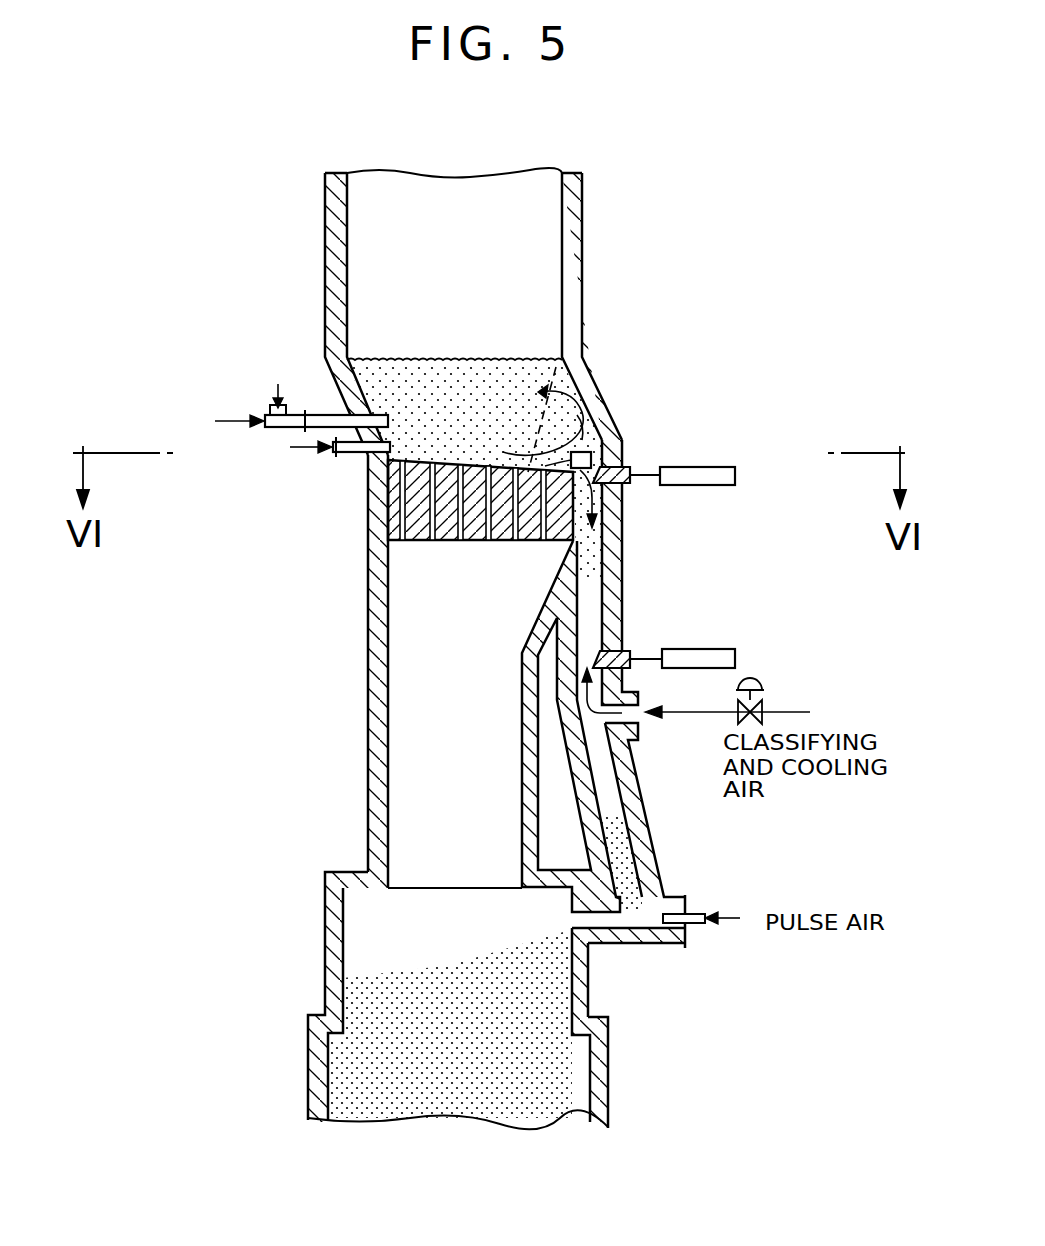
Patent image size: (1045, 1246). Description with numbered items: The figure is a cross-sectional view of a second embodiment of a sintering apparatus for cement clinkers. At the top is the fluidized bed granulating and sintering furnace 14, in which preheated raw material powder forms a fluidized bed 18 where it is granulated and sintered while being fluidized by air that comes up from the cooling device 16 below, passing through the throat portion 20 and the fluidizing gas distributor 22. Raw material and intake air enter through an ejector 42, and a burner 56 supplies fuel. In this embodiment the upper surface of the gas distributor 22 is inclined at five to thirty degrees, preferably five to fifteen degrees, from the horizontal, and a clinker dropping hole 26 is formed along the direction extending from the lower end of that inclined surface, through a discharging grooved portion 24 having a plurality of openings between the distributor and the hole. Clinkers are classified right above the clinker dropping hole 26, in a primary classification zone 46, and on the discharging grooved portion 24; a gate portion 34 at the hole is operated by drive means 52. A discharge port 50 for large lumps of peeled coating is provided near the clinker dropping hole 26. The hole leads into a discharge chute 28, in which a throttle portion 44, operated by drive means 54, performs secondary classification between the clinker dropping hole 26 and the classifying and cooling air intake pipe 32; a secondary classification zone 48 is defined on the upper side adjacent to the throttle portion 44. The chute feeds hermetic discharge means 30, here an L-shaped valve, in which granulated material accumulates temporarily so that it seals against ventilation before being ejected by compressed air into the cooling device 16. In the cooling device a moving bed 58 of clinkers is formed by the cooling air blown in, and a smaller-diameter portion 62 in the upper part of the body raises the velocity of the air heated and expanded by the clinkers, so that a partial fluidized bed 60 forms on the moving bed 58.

The fluidized bed granulating and sintering furnace 14 is at (583, 248).
The cooling device 16 is at (610, 1088).
The fluidized bed 18 is at (486, 372).
The throat portion 20 is at (398, 726).
The fluidizing gas distributor 22 is at (367, 538).
The discharging grooved portion 24 is at (605, 553).
The clinker dropping hole 26 is at (622, 512).
The discharge chute 28 is at (624, 599).
The hermetic discharge means 30 is at (661, 946).
The classifying and cooling air intake pipe 32 is at (673, 717).
The gate portion 34 is at (630, 486).
The ejector 42 is at (278, 429).
The throttle portion 44 is at (625, 650).
The primary classification zone 46 is at (598, 442).
The secondary classification zone 48 is at (598, 590).
The discharge port 50 is at (600, 426).
The drive means of the gate portion 52 is at (737, 473).
The drive means of the throttle portion 54 is at (737, 659).
The burner 56 is at (351, 455).
The moving bed 58 is at (360, 1062).
The partial fluidized bed 60 is at (362, 994).
The smaller-diameter portion 62 is at (592, 992).